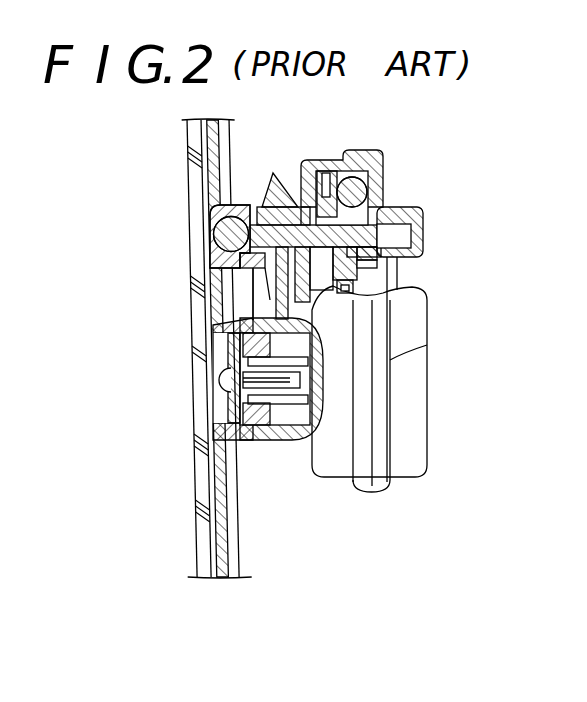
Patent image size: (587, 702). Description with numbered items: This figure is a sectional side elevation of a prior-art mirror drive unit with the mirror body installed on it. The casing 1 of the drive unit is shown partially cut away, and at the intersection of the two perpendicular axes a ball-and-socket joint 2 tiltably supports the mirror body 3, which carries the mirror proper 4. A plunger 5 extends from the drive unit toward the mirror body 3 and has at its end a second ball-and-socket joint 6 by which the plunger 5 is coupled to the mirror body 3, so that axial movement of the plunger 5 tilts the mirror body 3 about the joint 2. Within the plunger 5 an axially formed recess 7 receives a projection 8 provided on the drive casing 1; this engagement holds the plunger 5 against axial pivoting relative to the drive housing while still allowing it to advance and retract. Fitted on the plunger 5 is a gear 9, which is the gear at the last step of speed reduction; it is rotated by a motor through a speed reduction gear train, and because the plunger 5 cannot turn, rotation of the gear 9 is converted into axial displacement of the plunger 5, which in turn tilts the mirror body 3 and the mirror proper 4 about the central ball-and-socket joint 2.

The casing 1 is at (345, 483).
The ball-and-socket joint 2 is at (247, 440).
The mirror body 3 is at (227, 580).
The mirror proper 4 is at (197, 532).
The plunger 5 is at (265, 262).
The ball-and-socket joint 6 is at (227, 207).
The recess 7 is at (267, 192).
The projection 8 is at (338, 174).
The gear 9 is at (333, 287).